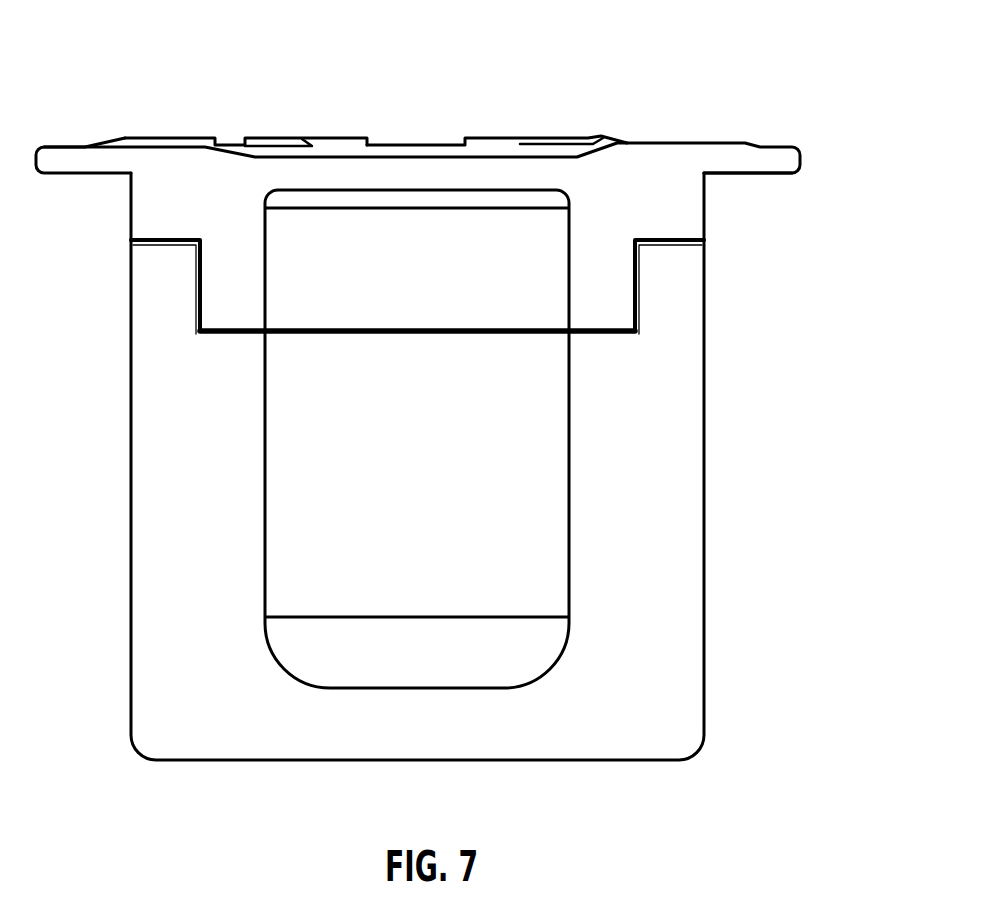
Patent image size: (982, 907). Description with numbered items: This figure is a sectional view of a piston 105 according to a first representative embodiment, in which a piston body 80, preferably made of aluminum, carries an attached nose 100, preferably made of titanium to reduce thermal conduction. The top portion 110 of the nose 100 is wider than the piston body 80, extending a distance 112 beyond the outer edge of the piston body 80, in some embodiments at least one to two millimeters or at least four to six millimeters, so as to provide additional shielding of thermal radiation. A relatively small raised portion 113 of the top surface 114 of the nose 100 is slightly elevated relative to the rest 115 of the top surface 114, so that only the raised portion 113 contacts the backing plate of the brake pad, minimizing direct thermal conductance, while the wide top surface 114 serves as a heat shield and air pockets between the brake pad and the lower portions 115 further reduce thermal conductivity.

The piston body 80 is at (695, 422).
The nose 100 is at (151, 188).
The piston 105 is at (717, 76).
The top portion 110 is at (796, 161).
The distance 112 is at (752, 176).
The raised portion 113 is at (317, 136).
The top surface 114 is at (58, 146).
The lower portions of top surface 115 is at (586, 137).